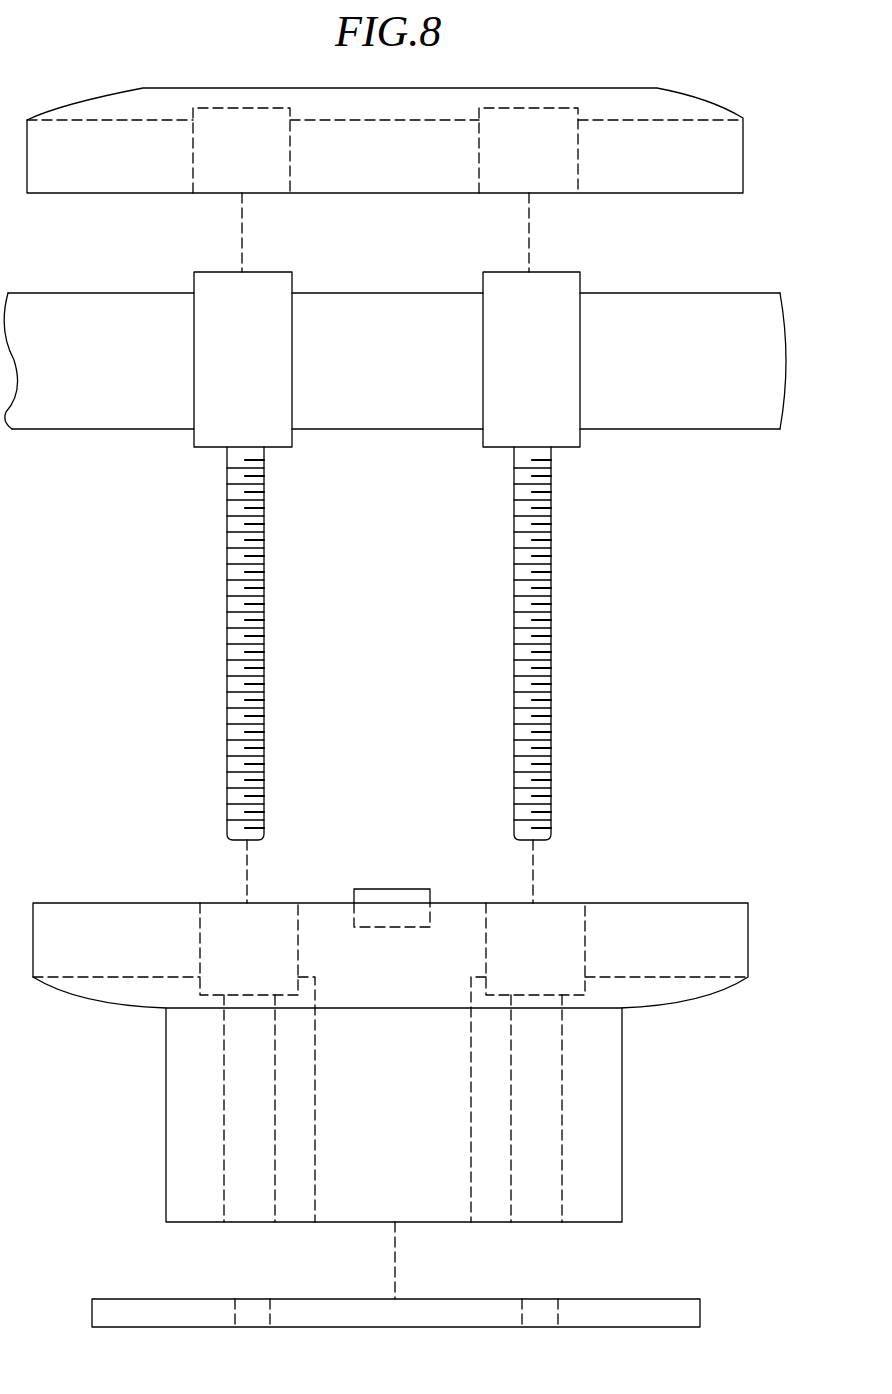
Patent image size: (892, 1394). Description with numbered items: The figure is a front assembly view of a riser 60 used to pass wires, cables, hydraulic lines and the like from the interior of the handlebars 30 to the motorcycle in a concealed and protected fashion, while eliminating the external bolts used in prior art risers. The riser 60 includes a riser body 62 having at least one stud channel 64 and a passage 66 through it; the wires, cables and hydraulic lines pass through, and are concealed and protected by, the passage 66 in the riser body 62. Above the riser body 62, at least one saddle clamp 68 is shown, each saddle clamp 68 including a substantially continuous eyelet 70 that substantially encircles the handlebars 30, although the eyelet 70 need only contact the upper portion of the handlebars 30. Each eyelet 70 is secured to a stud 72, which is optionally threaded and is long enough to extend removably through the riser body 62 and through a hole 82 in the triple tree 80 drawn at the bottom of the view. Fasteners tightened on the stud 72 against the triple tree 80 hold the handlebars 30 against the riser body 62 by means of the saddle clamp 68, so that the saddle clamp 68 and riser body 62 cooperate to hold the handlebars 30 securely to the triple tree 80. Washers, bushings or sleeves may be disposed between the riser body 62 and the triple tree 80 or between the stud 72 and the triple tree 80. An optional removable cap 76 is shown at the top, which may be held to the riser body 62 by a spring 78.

The riser 60 is at (401, 663).
The removable cap 76 is at (385, 161).
The handlebars 30 is at (395, 337).
The eyelet 70 is at (387, 346).
The saddle clamp 68 is at (335, 574).
The stud 72 is at (340, 675).
The riser body 62 is at (383, 1047).
The spring 78 is at (409, 871).
The stud channel 64 is at (369, 1147).
The passage 66 is at (394, 1134).
The triple tree 80 is at (381, 1297).
The hole 82 is at (363, 1297).